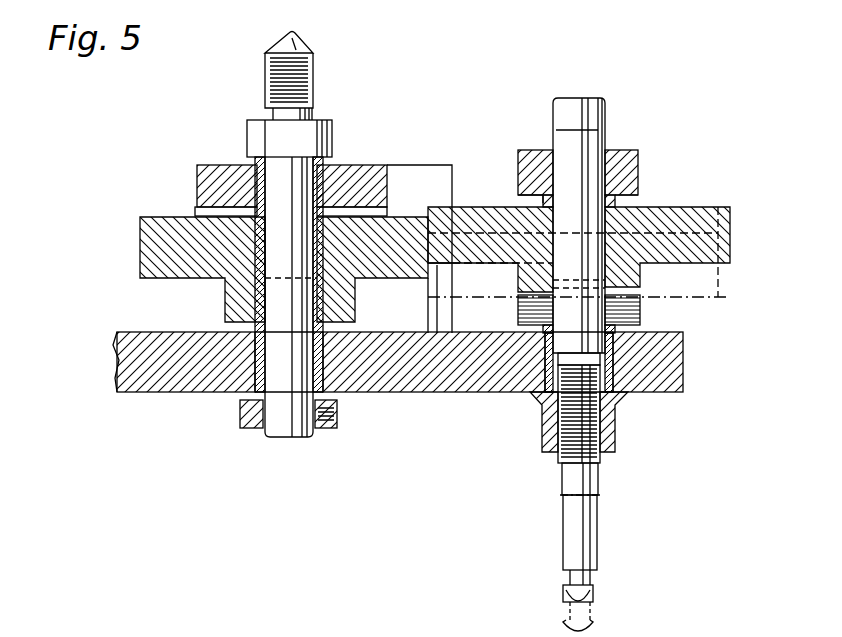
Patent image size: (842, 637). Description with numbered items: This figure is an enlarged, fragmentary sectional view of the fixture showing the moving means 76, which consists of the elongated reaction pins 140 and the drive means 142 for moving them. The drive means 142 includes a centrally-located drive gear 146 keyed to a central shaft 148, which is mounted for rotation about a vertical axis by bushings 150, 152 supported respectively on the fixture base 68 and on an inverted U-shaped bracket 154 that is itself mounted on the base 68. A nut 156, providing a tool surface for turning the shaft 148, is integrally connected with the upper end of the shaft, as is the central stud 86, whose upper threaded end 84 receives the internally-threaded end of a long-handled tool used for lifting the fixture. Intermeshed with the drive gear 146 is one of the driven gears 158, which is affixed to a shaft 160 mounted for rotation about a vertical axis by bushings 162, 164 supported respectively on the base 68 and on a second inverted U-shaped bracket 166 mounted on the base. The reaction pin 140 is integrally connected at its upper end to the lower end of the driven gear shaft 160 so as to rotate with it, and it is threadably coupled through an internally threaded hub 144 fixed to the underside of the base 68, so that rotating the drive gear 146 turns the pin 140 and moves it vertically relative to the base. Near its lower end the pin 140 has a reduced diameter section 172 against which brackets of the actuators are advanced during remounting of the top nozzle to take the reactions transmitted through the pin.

The moving means 76 is at (473, 88).
The upper threaded end 84 is at (312, 82).
The central stud 86 is at (312, 112).
The nut 156 is at (248, 133).
The bushing 150 is at (232, 168).
The inverted U-shaped bracket 154 is at (340, 165).
The drive means 142 is at (440, 131).
The drive gear 146 is at (176, 217).
The central shaft 148 is at (286, 437).
The bushing 152 is at (228, 392).
The fixture base 68 is at (683, 356).
The driven gear 158 is at (670, 207).
The shaft 160 is at (578, 98).
The bushing 162 is at (610, 150).
The inverted U-shaped bracket 166 is at (640, 166).
The bushing 164 is at (612, 360).
The internally threaded hub 144 is at (616, 424).
The reaction pin 140 is at (594, 532).
The reduced diameter section 172 is at (588, 579).